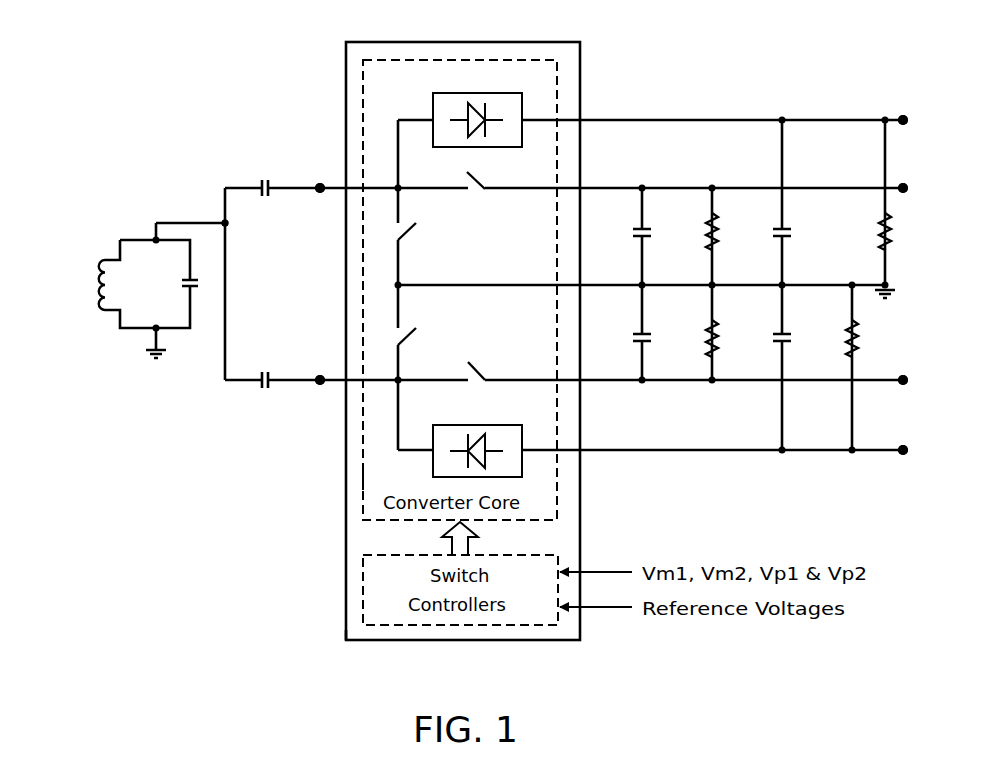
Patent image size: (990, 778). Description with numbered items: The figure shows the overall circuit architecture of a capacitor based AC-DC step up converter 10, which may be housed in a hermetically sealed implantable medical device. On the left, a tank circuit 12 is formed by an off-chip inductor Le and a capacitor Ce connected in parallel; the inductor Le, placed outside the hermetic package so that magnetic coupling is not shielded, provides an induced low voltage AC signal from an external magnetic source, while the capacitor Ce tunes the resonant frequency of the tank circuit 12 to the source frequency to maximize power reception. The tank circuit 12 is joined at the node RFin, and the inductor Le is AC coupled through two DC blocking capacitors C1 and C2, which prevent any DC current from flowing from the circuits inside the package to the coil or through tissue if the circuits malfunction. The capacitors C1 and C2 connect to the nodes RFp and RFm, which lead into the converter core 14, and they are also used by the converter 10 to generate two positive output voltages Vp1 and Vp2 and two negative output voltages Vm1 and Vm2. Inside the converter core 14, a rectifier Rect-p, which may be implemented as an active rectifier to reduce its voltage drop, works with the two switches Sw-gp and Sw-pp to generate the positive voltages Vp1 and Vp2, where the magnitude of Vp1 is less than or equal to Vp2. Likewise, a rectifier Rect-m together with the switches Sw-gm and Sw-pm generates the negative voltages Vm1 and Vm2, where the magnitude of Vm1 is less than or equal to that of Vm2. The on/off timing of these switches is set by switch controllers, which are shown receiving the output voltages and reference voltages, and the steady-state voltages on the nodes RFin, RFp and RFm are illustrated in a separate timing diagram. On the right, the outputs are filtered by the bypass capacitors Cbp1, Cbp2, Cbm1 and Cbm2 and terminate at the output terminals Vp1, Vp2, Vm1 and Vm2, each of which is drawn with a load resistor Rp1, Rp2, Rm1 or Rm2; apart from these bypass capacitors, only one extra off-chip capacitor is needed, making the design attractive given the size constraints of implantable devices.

The capacitor based AC-DC step up converter 10 is at (219, 564).
The tank circuit 12 is at (147, 386).
The converter core 14 is at (360, 481).
The inductor Le is at (103, 290).
The capacitor Ce is at (178, 283).
The DC blocking capacitor C1 is at (259, 183).
The DC blocking capacitor C2 is at (259, 386).
The RFin node RFin is at (219, 214).
The RFp node RFp is at (320, 176).
The RFm node RFm is at (320, 394).
The rectifier Rect-p is at (511, 92).
The rectifier Rect-m is at (513, 424).
The switch Sw-pp is at (480, 192).
The switch Sw-gp is at (426, 240).
The switch Sw-gm is at (440, 320).
The switch Sw-pm is at (480, 368).
The bypass capacitor Cbp1 is at (638, 238).
The bypass capacitor Cbp2 is at (778, 238).
The bypass capacitor Cbm1 is at (638, 343).
The bypass capacitor Cbm2 is at (778, 343).
The load resistor Rp1 is at (708, 218).
The load resistor Rp2 is at (882, 220).
The load resistor Rm1 is at (708, 320).
The load resistor Rm2 is at (856, 327).
The positive output voltage Vp1 is at (906, 184).
The positive output voltage Vp2 is at (906, 116).
The negative output voltage Vm1 is at (906, 385).
The negative output voltage Vm2 is at (906, 455).